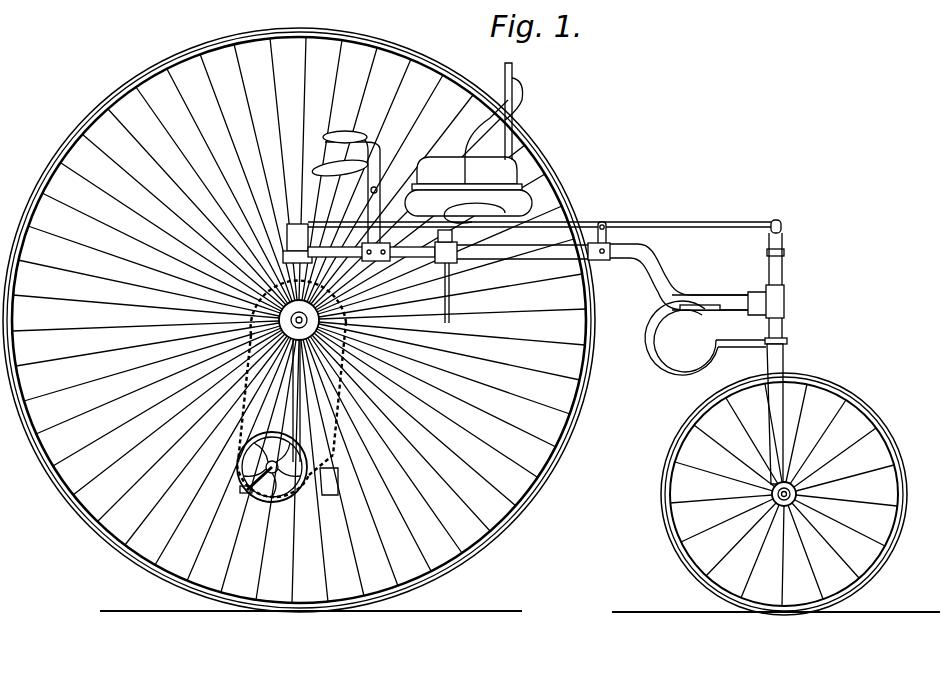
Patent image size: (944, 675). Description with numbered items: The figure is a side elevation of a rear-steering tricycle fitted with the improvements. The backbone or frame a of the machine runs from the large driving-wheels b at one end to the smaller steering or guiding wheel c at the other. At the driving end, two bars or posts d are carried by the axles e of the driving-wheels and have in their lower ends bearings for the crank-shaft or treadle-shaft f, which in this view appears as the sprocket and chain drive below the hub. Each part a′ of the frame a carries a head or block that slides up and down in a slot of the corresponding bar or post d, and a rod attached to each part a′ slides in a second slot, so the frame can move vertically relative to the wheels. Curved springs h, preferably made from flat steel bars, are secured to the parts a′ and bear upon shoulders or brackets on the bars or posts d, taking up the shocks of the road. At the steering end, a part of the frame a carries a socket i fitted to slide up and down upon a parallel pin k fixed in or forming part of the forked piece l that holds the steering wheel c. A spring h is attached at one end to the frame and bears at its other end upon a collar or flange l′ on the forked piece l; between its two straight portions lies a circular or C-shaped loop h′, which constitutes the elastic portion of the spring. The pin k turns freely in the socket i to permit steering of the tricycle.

The backbone or frame a is at (529, 272).
The part of the frame a′ is at (345, 189).
The driving-wheel b is at (299, 320).
The steering or guiding wheel c is at (791, 494).
The bar or post d is at (305, 385).
The axle e is at (295, 320).
The crank-shaft or treadle-shaft f is at (291, 391).
The spring h is at (542, 315).
The circular or C-shaped part or loop h′ is at (544, 321).
The socket i is at (781, 300).
The parallel pin k is at (784, 331).
The forked piece l is at (774, 414).
The collar or flange l′ is at (787, 294).